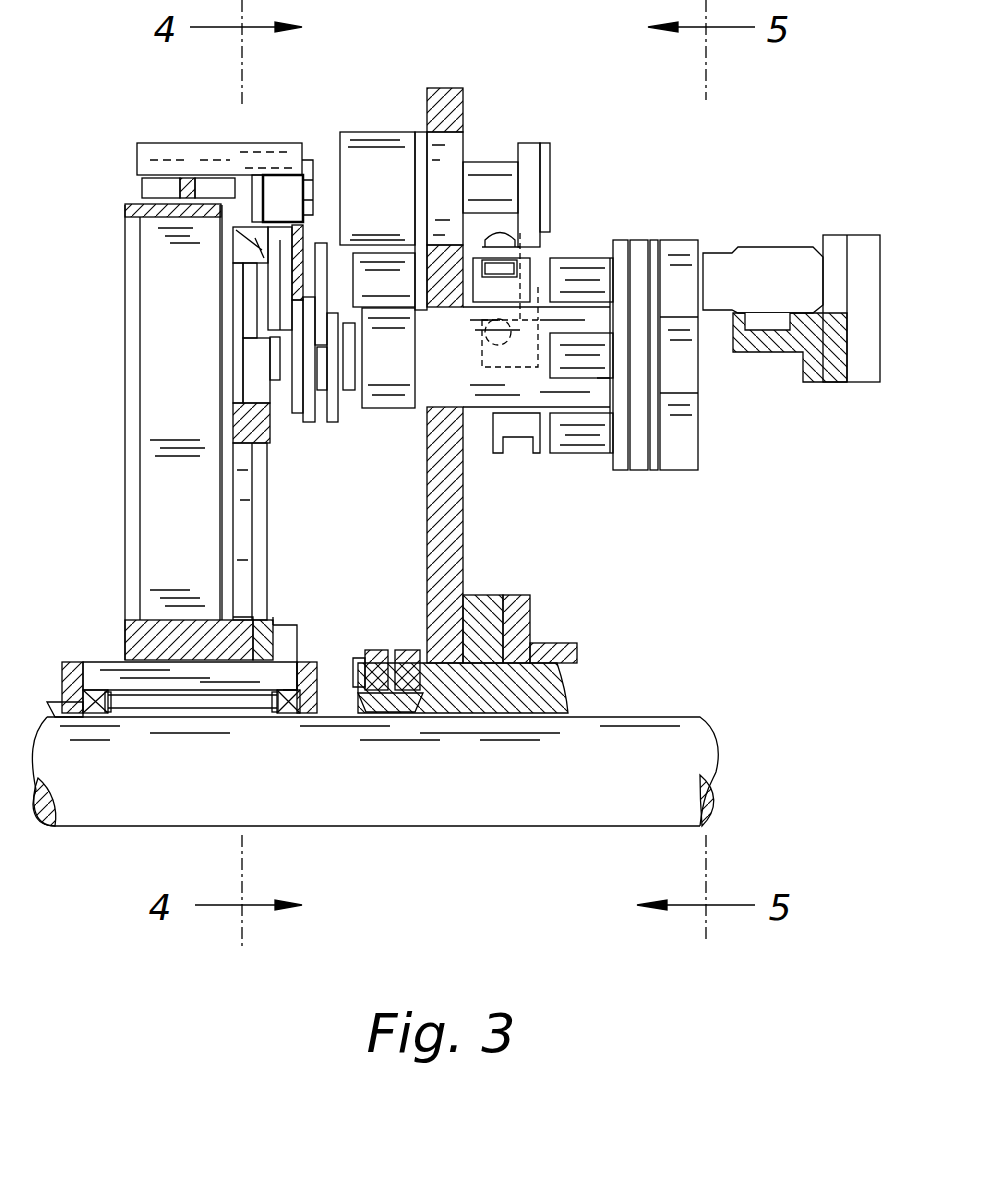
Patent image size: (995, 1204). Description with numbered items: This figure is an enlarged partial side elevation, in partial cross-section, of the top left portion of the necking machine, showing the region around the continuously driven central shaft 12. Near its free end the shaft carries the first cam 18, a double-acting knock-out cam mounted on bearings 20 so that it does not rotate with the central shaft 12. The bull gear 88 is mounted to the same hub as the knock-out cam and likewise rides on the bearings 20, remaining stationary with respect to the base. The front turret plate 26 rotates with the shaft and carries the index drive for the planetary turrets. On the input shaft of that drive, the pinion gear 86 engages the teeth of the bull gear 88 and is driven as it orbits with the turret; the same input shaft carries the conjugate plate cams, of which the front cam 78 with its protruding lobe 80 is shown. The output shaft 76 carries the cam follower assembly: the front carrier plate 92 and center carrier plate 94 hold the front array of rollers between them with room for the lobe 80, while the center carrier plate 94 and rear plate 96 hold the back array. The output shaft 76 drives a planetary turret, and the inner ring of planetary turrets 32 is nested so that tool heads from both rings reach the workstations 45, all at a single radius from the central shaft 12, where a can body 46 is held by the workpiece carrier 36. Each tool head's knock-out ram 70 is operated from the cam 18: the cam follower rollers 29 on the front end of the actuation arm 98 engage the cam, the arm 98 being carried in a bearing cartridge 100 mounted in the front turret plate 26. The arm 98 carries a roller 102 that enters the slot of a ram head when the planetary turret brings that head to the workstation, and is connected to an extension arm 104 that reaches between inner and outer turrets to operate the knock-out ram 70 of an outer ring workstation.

The central shaft 12 is at (420, 782).
The first cam 18 is at (125, 358).
The bearings 20 is at (80, 700).
The front turret plate 26 is at (463, 555).
The cam follower rollers 29 is at (145, 190).
The inner ring of planetary turrets 32 is at (636, 452).
The workpiece carrier 36 is at (745, 345).
The workstations 45 is at (682, 246).
The can body 46 is at (742, 256).
The knock-out ram 70 is at (500, 288).
The output shaft 76 is at (345, 358).
The front cam 78 is at (295, 246).
The lobe 80 is at (320, 247).
The pinion gear 86 is at (258, 360).
The bull gear 88 is at (268, 540).
The front carrier plate 92 is at (285, 398).
The center carrier plate 94 is at (308, 422).
The rear plate 96 is at (334, 422).
The actuation arm 98 is at (478, 172).
The bearing cartridge 100 is at (388, 140).
The roller 102 is at (490, 270).
The extension arm 104 is at (508, 360).